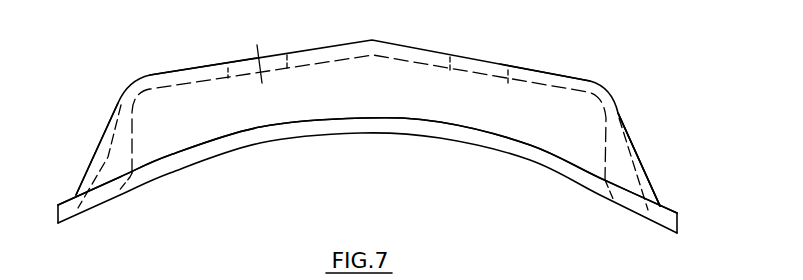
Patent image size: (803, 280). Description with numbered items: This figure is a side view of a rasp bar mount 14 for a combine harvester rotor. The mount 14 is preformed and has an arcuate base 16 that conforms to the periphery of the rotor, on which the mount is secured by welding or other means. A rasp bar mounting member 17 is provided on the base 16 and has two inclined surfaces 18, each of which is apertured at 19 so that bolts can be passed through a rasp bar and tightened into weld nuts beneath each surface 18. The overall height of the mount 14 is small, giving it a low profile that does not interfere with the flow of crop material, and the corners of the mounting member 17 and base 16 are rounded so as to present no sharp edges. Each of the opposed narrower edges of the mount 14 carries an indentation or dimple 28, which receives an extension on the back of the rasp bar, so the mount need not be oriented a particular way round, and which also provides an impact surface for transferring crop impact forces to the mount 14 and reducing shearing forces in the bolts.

The rasp bar mount 14 is at (208, 162).
The arcuate base 16 is at (440, 133).
The rasp bar mounting member 17 is at (641, 167).
The inclined surface 18 is at (305, 50).
The aperture 19 is at (235, 66).
The indentation or dimple 28 is at (86, 159).